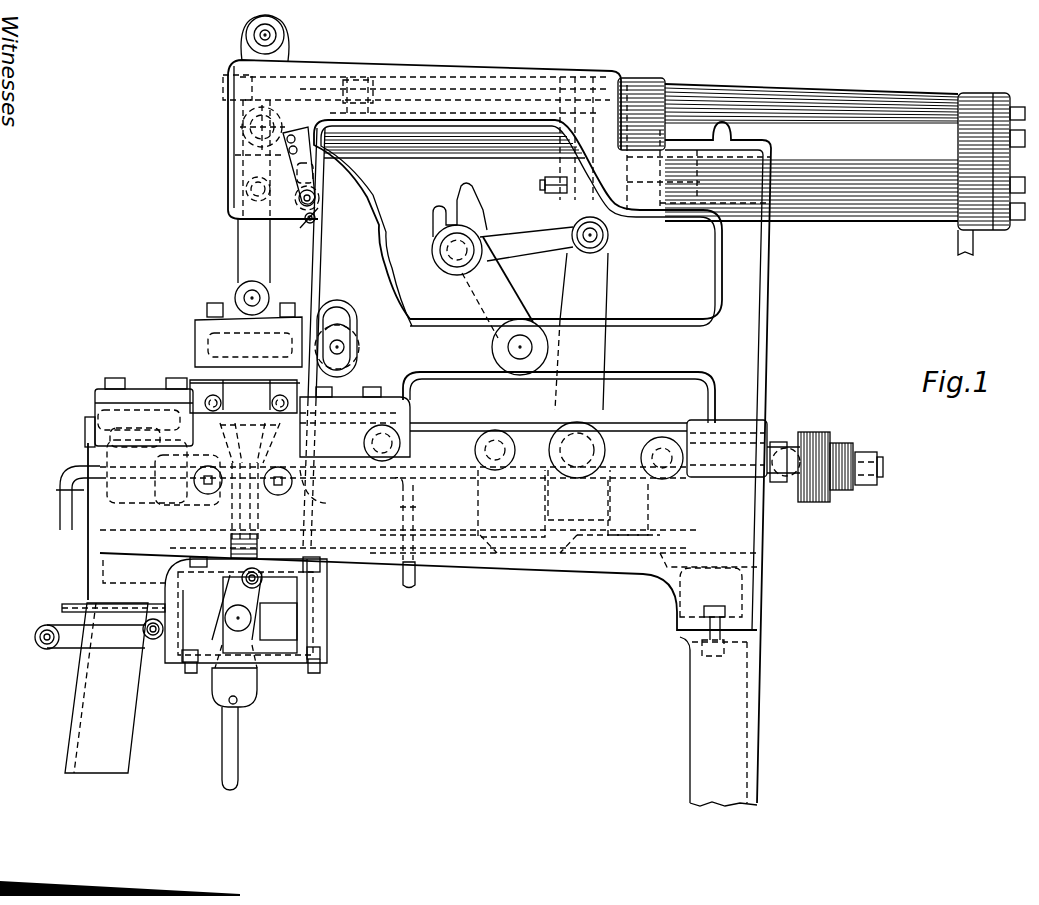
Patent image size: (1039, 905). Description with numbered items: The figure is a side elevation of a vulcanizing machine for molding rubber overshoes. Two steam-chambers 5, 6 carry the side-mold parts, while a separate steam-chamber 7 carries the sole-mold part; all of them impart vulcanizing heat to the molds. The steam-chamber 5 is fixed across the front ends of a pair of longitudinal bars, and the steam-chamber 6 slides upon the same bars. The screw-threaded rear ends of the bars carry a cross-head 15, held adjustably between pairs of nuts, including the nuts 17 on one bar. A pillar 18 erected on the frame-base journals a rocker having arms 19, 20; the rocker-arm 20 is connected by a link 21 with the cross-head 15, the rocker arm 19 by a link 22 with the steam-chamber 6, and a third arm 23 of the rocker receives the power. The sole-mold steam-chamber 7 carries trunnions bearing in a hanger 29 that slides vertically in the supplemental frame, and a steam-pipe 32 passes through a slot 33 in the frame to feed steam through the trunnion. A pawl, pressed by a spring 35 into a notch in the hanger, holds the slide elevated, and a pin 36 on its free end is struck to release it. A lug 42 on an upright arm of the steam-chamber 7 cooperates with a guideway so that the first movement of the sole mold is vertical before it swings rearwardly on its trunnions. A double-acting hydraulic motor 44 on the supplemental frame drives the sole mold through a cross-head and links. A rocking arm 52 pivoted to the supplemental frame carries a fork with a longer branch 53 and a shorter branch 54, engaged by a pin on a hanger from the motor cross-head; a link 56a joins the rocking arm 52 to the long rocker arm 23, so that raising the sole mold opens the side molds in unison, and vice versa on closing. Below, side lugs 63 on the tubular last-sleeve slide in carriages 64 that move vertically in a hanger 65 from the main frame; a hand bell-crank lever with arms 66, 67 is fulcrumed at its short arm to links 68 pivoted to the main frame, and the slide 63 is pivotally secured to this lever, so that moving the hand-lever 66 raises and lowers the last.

The steam-chamber 5 is at (170, 483).
The steam-chamber 6 is at (327, 502).
The steam-chamber 7 is at (246, 419).
The cross-head 15 is at (813, 435).
The pair of nuts 17 is at (788, 482).
The pillar 18 is at (622, 497).
The rocker arm 19 is at (518, 465).
The rocker-arm 20 is at (632, 445).
The link 21 is at (712, 477).
The link 22 is at (443, 435).
The third arm of the rocker 23 is at (581, 313).
The hanger 29 is at (370, 155).
The steam-pipe 32 is at (345, 347).
The slot 33 is at (356, 338).
The spring 35 is at (303, 223).
The pin 36 is at (304, 163).
The lug 42 is at (260, 222).
The double-acting hydraulic motor 44 is at (821, 165).
The rocking arm 52 is at (516, 293).
The long branch of fork 53 is at (477, 206).
The short branch of fork 54 is at (433, 232).
The link 56a is at (518, 238).
The side lugs 63 is at (240, 625).
The carriages 64 is at (297, 612).
The hanger 65 is at (327, 588).
The hand-lever arm 66 is at (168, 643).
The bell-crank lever arm 67 is at (252, 618).
The links 68 is at (262, 572).